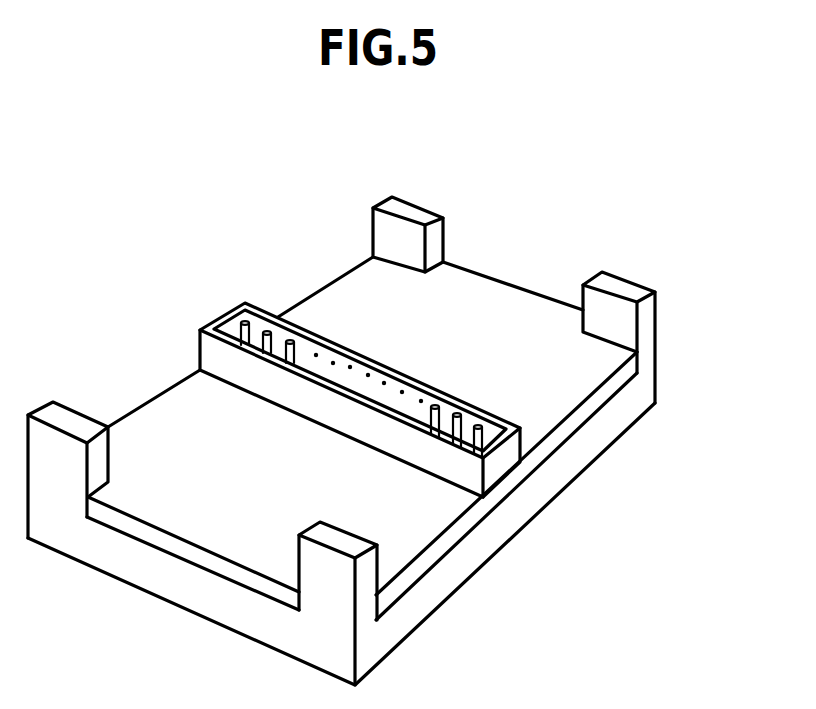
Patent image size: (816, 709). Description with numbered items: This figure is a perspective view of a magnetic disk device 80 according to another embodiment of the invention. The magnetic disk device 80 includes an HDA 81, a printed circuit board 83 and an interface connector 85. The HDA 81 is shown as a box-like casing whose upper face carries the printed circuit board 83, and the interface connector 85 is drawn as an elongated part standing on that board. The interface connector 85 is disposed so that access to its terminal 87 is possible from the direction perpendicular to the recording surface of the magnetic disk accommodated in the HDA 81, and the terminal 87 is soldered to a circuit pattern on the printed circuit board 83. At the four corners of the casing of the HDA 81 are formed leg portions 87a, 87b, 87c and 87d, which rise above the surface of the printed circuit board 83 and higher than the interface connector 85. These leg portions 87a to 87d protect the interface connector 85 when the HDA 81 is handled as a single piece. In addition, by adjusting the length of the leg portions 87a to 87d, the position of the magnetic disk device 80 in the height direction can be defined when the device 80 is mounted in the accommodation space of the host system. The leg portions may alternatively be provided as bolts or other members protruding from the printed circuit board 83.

The magnetic disk device 80 is at (696, 317).
The HDA 81 is at (498, 528).
The printed circuit board 83 is at (555, 395).
The interface connector 85 is at (375, 363).
The terminal 87 is at (270, 325).
The leg portion 87a is at (616, 280).
The leg portion 87b is at (412, 213).
The leg portion 87c is at (58, 413).
The leg portion 87d is at (322, 530).